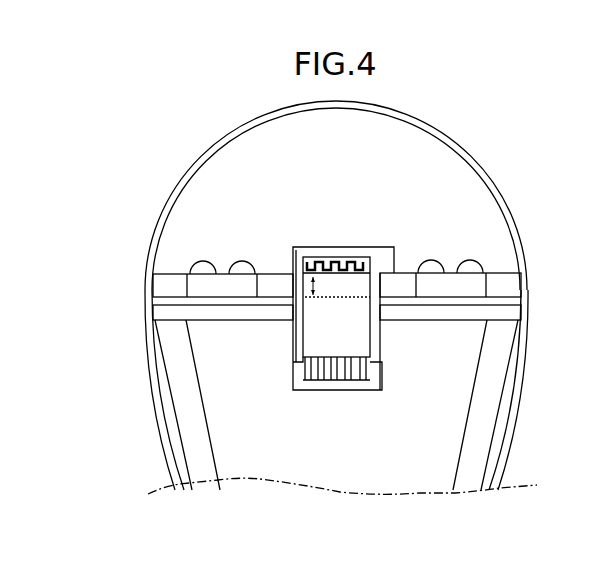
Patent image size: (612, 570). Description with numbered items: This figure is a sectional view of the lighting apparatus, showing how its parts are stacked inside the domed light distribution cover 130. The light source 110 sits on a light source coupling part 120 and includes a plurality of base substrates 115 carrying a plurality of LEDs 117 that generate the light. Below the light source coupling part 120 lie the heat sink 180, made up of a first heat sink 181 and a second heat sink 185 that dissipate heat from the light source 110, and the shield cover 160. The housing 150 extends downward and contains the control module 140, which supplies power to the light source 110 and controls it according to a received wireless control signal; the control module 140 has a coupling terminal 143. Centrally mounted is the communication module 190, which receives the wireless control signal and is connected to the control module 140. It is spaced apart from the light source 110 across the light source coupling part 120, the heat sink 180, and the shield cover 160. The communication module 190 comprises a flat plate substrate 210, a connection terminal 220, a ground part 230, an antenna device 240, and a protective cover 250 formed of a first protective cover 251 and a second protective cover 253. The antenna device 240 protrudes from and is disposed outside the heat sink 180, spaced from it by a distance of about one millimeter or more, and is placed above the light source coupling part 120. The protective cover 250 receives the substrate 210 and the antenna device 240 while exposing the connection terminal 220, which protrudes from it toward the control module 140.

The light source 110 is at (190, 246).
The base substrate 115 is at (500, 286).
The LED 117 is at (470, 262).
The light source coupling part 120 is at (160, 288).
The light distribution cover 130 is at (200, 158).
The control module 140 is at (218, 442).
The coupling terminal 143 is at (382, 377).
The housing 150 is at (510, 368).
The shield cover 160 is at (490, 316).
The heat sink 180 is at (103, 371).
The first heat sink 181 is at (168, 304).
The second heat sink 185 is at (162, 418).
The communication module 190 is at (482, 242).
The substrate 210 is at (303, 282).
The connection terminal 220 is at (320, 384).
The ground part 230 is at (307, 393).
The antenna device 240 is at (306, 258).
The protective cover 250 is at (321, 283).
The first protective cover 251 is at (268, 300).
The second protective cover 253 is at (290, 255).